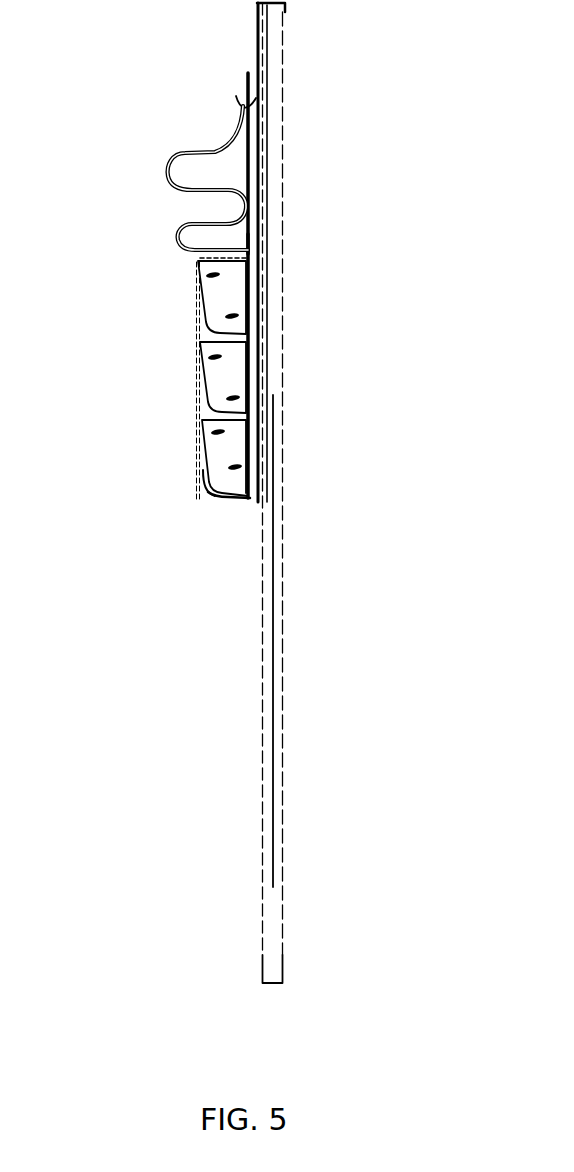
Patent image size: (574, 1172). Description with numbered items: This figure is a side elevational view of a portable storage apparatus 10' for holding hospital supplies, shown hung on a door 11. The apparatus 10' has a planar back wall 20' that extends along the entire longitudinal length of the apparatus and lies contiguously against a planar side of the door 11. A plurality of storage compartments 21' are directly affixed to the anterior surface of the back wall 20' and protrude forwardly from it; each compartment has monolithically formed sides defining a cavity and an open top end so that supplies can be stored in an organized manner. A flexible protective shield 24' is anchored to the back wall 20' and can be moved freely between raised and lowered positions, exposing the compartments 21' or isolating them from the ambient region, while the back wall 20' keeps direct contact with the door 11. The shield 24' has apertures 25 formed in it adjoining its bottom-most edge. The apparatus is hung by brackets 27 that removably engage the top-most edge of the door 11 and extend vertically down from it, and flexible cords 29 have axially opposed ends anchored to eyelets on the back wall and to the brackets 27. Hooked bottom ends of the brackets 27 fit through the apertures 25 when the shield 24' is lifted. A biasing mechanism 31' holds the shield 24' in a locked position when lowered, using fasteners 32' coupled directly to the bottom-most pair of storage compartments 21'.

The portable storage apparatus 10' is at (225, 289).
The door 11 is at (278, 672).
The planar back wall 20' is at (215, 324).
The storage compartments 21' is at (296, 378).
The flexible protective shield 24' is at (154, 260).
The apertures 25 is at (252, 243).
The brackets 27 is at (288, 12).
The flexible cords 29 is at (259, 165).
The biasing mechanism 31' is at (127, 401).
The fasteners 32' is at (170, 511).